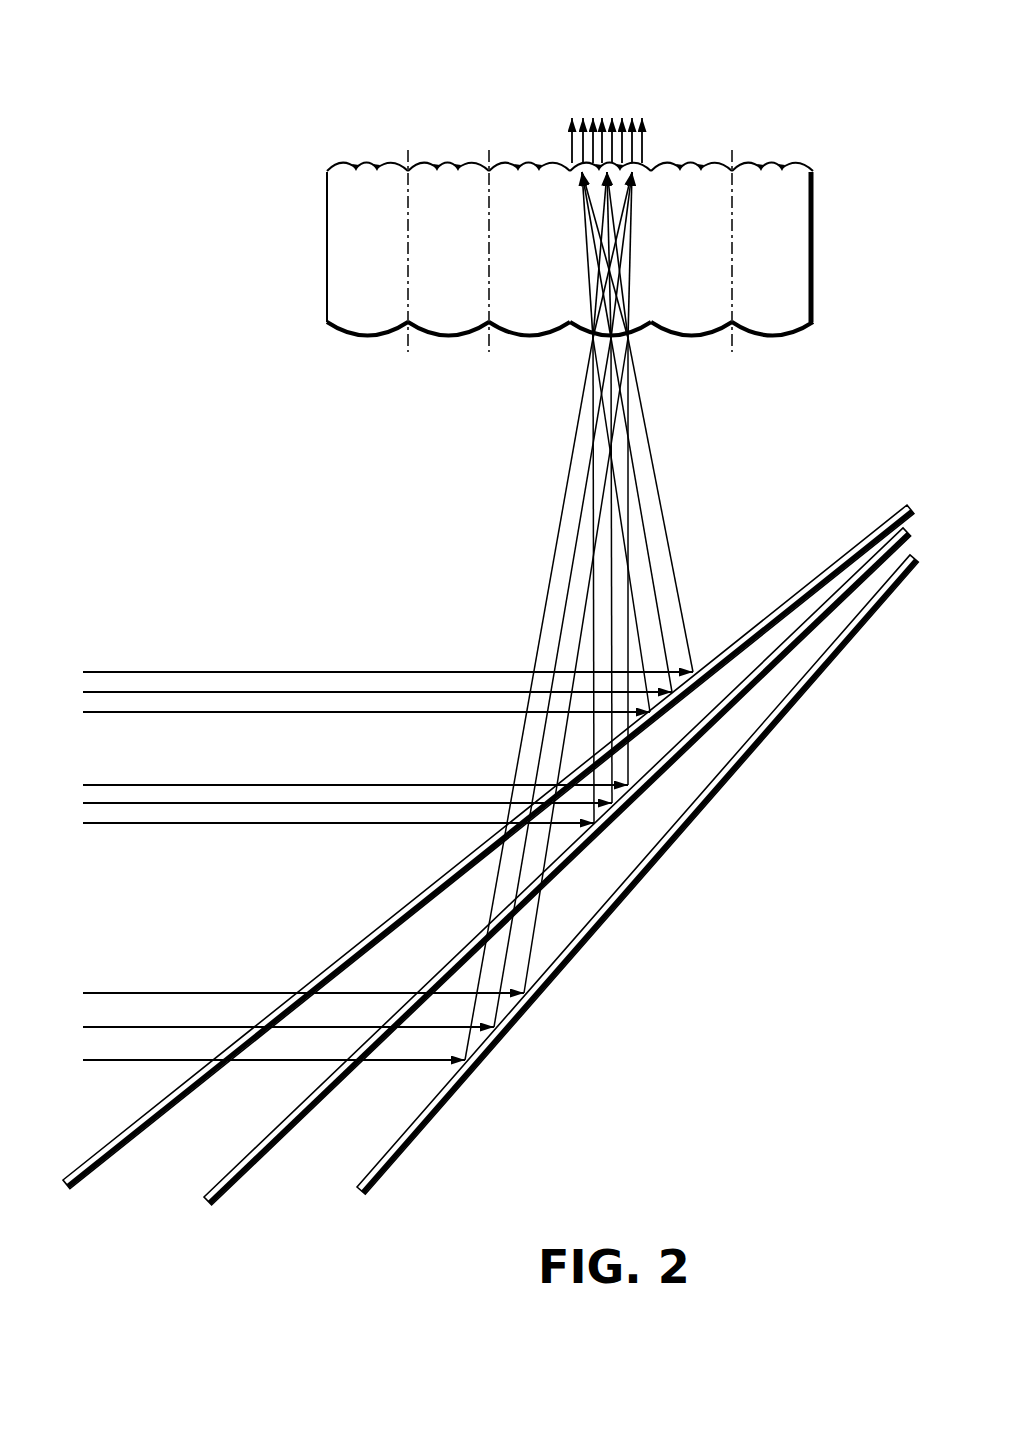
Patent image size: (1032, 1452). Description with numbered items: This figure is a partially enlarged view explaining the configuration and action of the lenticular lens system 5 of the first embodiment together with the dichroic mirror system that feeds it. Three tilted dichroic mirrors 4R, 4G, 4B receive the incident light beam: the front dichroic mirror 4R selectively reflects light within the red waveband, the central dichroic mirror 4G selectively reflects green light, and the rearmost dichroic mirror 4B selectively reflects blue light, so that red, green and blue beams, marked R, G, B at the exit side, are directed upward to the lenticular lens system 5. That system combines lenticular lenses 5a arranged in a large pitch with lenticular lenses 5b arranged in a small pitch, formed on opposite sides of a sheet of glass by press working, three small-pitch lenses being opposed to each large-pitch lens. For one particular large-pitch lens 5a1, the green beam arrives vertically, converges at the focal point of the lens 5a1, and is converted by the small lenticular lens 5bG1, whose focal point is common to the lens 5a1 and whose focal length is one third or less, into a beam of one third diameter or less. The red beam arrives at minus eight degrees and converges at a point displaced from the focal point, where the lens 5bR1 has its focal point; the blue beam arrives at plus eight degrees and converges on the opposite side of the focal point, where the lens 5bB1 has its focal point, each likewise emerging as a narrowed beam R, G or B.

The lenticular lens system 5 is at (327, 256).
The lenticular lenses arranged in a large pitch 5a is at (447, 340).
The lenticular lens 5a1 is at (648, 338).
The lenticular lenses arranged in a small pitch 5b is at (452, 163).
The lens 5bR1 is at (570, 167).
The small lenticular lens 5bG1 is at (614, 165).
The lens 5bB1 is at (645, 165).
The dichroic mirror 4R is at (100, 1172).
The dichroic mirror 4G is at (240, 1190).
The dichroic mirror 4B is at (410, 1140).
The red light R is at (580, 122).
The green light G is at (608, 122).
The blue light B is at (635, 122).